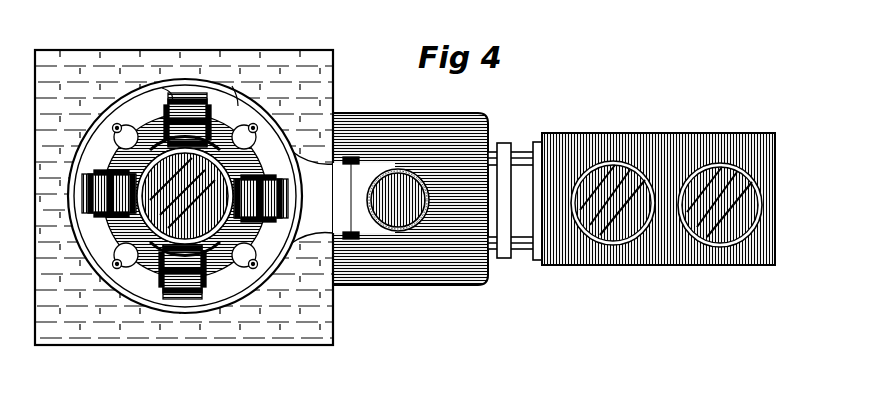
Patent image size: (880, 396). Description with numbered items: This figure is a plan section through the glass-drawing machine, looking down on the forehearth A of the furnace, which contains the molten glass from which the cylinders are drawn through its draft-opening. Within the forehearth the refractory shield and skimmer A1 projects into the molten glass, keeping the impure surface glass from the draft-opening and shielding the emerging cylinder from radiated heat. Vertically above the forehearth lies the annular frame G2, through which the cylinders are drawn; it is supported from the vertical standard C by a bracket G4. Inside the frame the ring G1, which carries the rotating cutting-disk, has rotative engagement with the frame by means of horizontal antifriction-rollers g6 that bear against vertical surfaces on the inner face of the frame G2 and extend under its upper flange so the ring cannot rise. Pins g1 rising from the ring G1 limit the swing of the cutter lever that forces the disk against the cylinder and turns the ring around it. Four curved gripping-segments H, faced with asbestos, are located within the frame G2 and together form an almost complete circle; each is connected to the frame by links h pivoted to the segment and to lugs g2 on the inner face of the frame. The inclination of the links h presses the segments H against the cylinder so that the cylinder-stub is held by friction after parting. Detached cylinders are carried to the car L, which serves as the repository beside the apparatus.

The forehearth A is at (276, 325).
The refractory shield and skimmer A1 is at (262, 290).
The vertical standard C is at (423, 192).
The ring G1 is at (188, 285).
The annular frame G2 is at (132, 270).
The bracket G4 is at (351, 157).
The pins g1 is at (96, 242).
The lugs g2 is at (98, 193).
The horizontal antifriction-rollers g6 is at (244, 110).
The curved gripping-segments H is at (115, 166).
The links h is at (162, 86).
The car L is at (560, 255).